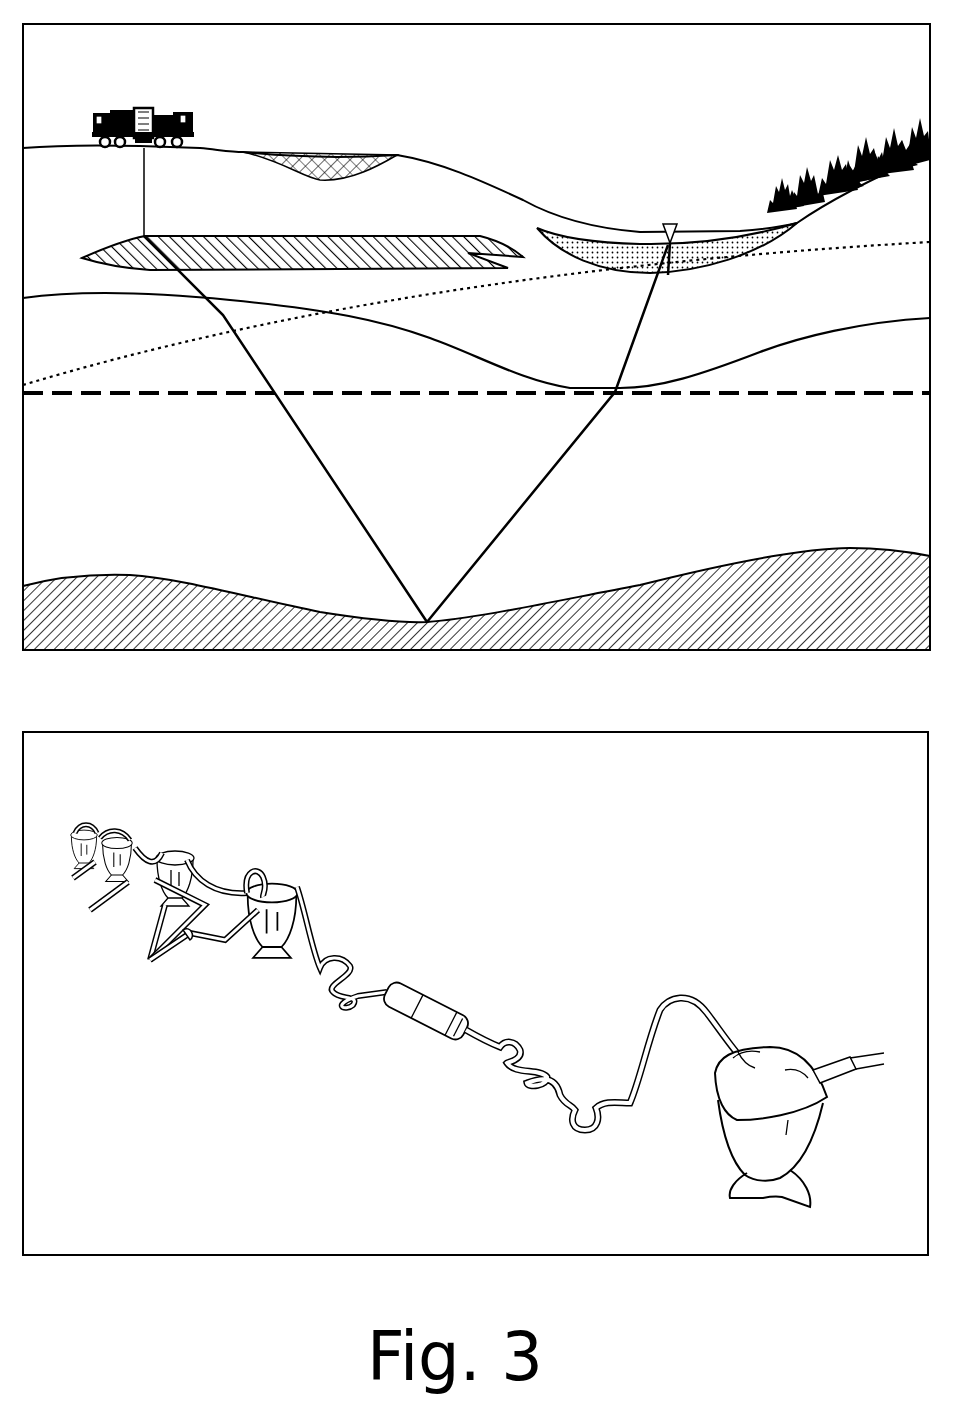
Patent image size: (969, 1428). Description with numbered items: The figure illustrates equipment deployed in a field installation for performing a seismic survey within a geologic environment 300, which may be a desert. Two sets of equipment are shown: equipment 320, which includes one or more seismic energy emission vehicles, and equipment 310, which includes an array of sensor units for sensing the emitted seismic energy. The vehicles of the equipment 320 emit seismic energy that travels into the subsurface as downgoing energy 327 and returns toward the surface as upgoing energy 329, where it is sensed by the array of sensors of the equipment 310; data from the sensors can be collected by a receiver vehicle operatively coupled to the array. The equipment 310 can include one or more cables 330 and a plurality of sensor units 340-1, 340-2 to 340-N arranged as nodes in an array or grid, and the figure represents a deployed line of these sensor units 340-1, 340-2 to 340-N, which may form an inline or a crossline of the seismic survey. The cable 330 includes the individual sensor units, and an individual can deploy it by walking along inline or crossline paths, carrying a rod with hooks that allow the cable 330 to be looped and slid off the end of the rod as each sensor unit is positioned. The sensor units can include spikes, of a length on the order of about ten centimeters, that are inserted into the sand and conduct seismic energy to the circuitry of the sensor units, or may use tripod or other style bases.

The geologic environment 300 is at (872, 78).
The equipment 310 is at (656, 189).
The equipment 320 is at (164, 95).
The downgoing energy 327 is at (362, 470).
The upgoing energy 329 is at (592, 462).
The cable 330 is at (440, 1000).
The sensor unit 340-1 is at (752, 1150).
The sensor unit 340-2 is at (270, 940).
The sensor unit 340-N is at (90, 830).